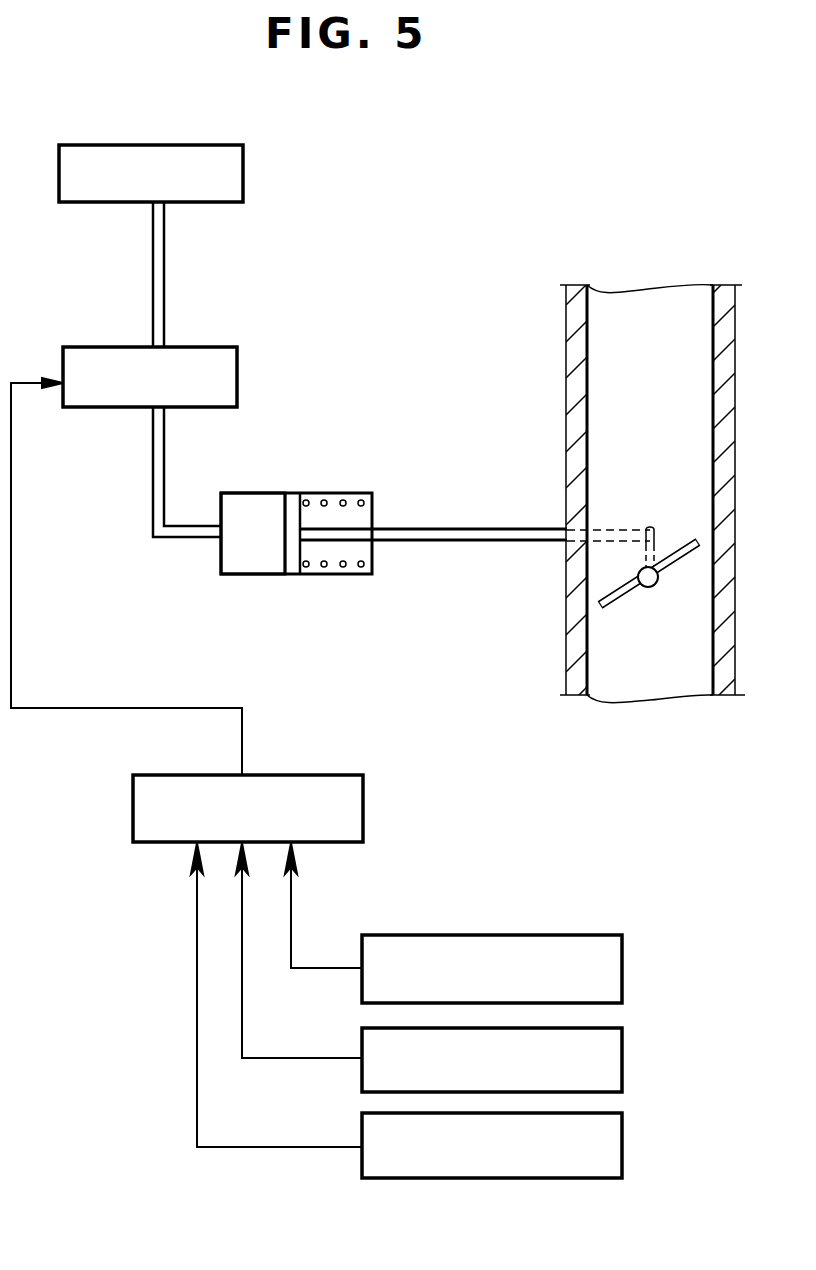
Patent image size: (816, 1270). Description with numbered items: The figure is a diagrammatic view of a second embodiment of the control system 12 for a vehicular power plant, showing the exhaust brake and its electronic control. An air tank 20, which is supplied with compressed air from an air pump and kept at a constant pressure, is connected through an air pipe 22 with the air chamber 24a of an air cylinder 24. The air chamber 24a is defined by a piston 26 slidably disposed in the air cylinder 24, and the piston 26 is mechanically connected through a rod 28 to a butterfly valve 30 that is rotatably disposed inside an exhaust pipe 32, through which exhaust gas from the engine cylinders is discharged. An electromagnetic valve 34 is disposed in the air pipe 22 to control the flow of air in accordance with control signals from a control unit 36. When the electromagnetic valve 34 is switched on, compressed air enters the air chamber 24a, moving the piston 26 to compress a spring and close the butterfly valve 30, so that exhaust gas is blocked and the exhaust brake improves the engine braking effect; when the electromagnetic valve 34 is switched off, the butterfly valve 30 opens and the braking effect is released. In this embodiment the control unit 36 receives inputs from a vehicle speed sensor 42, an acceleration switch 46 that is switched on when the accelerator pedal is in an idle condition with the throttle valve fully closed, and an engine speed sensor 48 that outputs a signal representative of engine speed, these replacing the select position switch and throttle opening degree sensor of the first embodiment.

The control system 12 is at (146, 978).
The air tank 20 is at (243, 173).
The air pipe 22 is at (166, 256).
The air cylinder 24 is at (296, 538).
The air chamber 24a is at (252, 555).
The piston 26 is at (292, 560).
The rod 28 is at (460, 527).
The butterfly valve 30 is at (606, 601).
The exhaust pipe 32 is at (568, 395).
The electromagnetic valve 34 is at (237, 360).
The control unit 36 is at (363, 830).
The vehicle speed sensor 42 is at (622, 1160).
The acceleration switch 46 is at (602, 935).
The engine speed sensor 48 is at (622, 1053).